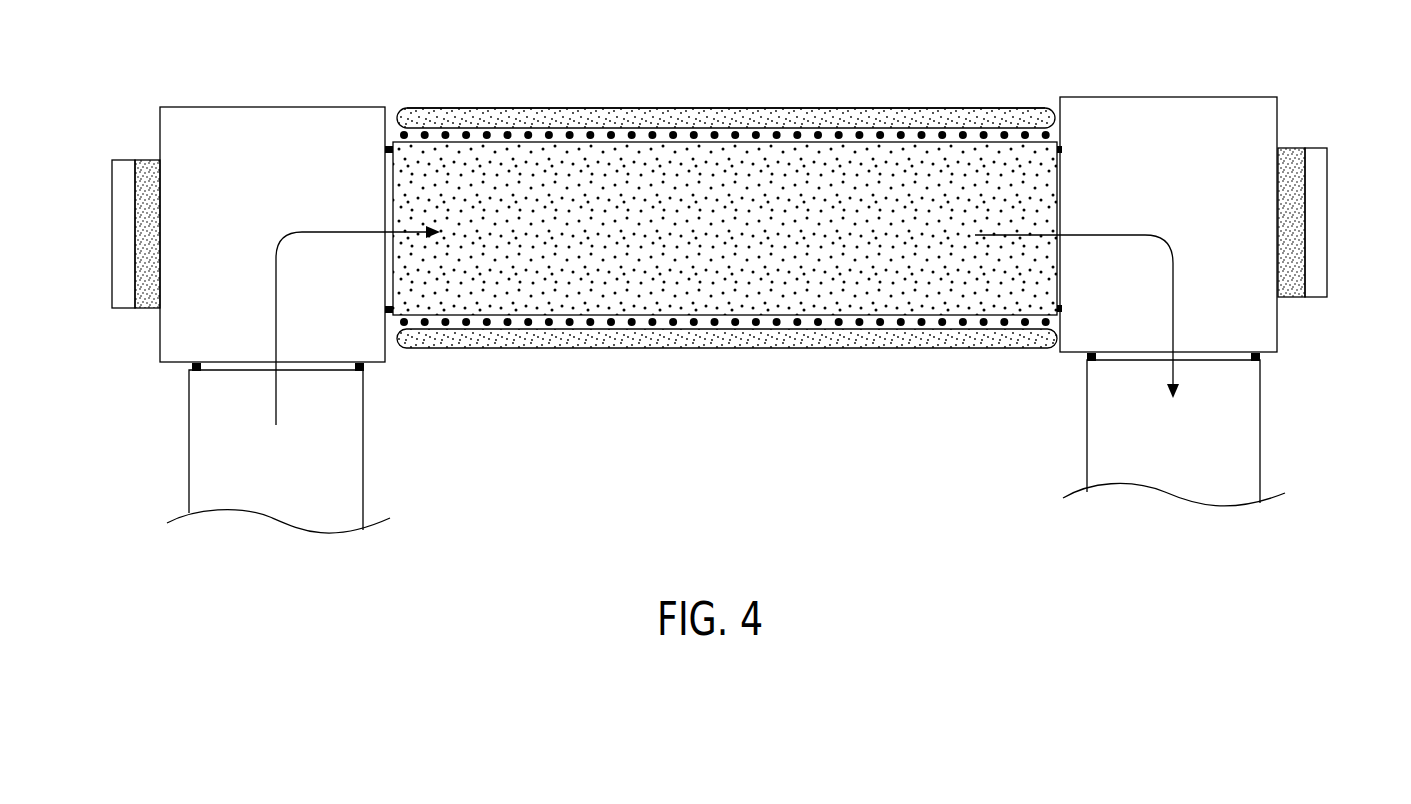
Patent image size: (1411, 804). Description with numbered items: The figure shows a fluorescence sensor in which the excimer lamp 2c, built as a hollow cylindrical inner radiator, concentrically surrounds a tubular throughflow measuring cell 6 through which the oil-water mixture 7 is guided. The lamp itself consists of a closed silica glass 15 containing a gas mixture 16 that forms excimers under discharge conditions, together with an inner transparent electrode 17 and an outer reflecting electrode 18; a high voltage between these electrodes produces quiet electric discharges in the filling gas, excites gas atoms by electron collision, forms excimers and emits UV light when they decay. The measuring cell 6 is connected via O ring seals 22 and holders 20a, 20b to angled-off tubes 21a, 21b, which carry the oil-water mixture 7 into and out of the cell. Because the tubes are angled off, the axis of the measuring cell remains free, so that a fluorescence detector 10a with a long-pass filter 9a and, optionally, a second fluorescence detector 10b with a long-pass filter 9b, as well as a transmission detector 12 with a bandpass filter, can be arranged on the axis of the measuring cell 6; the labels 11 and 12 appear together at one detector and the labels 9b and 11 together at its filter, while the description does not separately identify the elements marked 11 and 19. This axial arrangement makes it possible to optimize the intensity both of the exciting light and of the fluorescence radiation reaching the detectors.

The excimer lamp 2c is at (702, 181).
The tubular throughflow measuring cell 6 is at (990, 157).
The oil-water mixture 7 is at (755, 292).
The long-pass filter 9a is at (150, 160).
The long-pass filter 9b is at (1326, 188).
The fluorescence detector 10a is at (122, 160).
The second fluorescence detector 10b is at (1351, 203).
The contact layer 11 is at (1290, 148).
The transmission detector 12 is at (1316, 148).
The closed silica glass 15 is at (392, 114).
The gas mixture 16 is at (502, 120).
The inner transparent electrode 17 is at (622, 137).
The outer reflecting electrode 18 is at (740, 107).
The current flow direction 19 is at (462, 240).
The holder 20a is at (284, 118).
The holder 20b is at (1115, 110).
The angled-off tube 21a is at (241, 465).
The angled-off tube 21b is at (1212, 488).
The O ring seals 22 is at (364, 366).